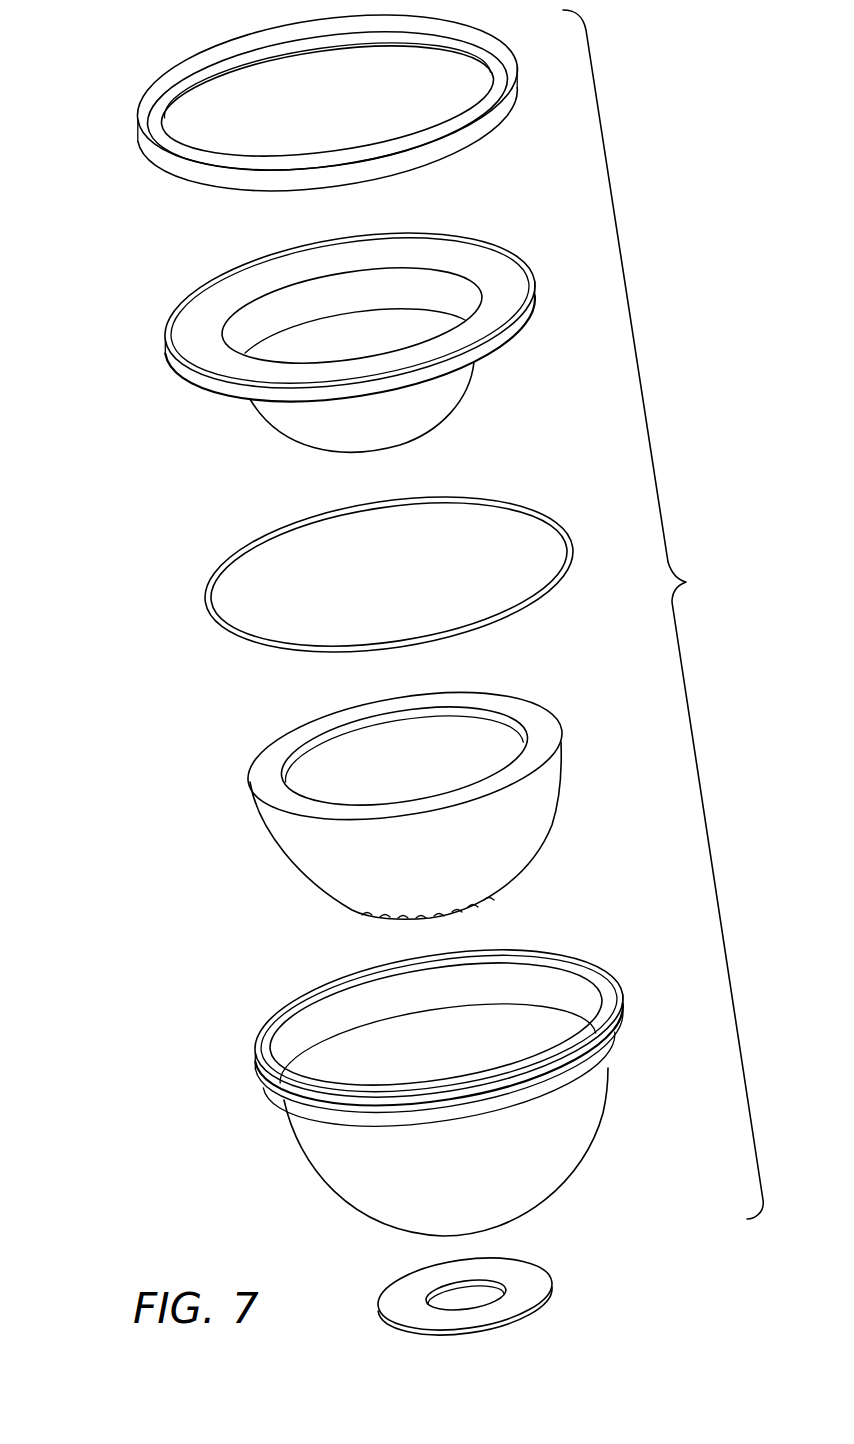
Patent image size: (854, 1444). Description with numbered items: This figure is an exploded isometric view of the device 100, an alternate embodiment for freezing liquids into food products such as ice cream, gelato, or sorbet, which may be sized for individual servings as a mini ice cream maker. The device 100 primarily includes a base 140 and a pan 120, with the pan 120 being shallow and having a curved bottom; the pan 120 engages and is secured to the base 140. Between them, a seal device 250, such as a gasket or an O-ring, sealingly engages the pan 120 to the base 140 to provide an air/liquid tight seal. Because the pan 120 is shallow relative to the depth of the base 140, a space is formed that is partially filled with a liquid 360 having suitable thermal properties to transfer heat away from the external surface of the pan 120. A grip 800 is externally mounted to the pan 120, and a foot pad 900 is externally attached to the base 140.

The device 100 is at (663, 614).
The grip 800 is at (138, 128).
The pan 120 is at (195, 330).
The seal device 250 is at (202, 594).
The liquid 360 is at (302, 861).
The base 140 is at (327, 1166).
The foot pad 900 is at (535, 1280).